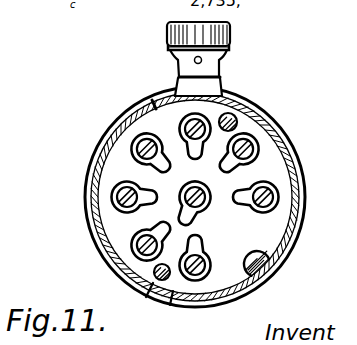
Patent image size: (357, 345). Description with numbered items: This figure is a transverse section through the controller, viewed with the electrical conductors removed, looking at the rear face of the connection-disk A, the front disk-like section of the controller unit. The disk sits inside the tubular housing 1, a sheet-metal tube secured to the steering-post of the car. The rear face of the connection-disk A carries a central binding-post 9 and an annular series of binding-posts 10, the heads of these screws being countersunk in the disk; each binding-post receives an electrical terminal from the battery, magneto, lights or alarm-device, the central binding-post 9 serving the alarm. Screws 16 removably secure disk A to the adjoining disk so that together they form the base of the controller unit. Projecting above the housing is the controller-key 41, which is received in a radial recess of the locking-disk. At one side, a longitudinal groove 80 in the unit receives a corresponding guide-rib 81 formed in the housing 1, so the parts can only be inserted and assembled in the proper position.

The tubular housing 1 is at (296, 158).
The central binding-post 9 is at (182, 200).
The binding-posts 10 is at (135, 137).
The screws 16 is at (236, 117).
The controller-key 41 is at (208, 88).
The longitudinal groove 80 is at (283, 267).
The guide-rib 81 is at (266, 271).
The connection-disk A is at (258, 222).